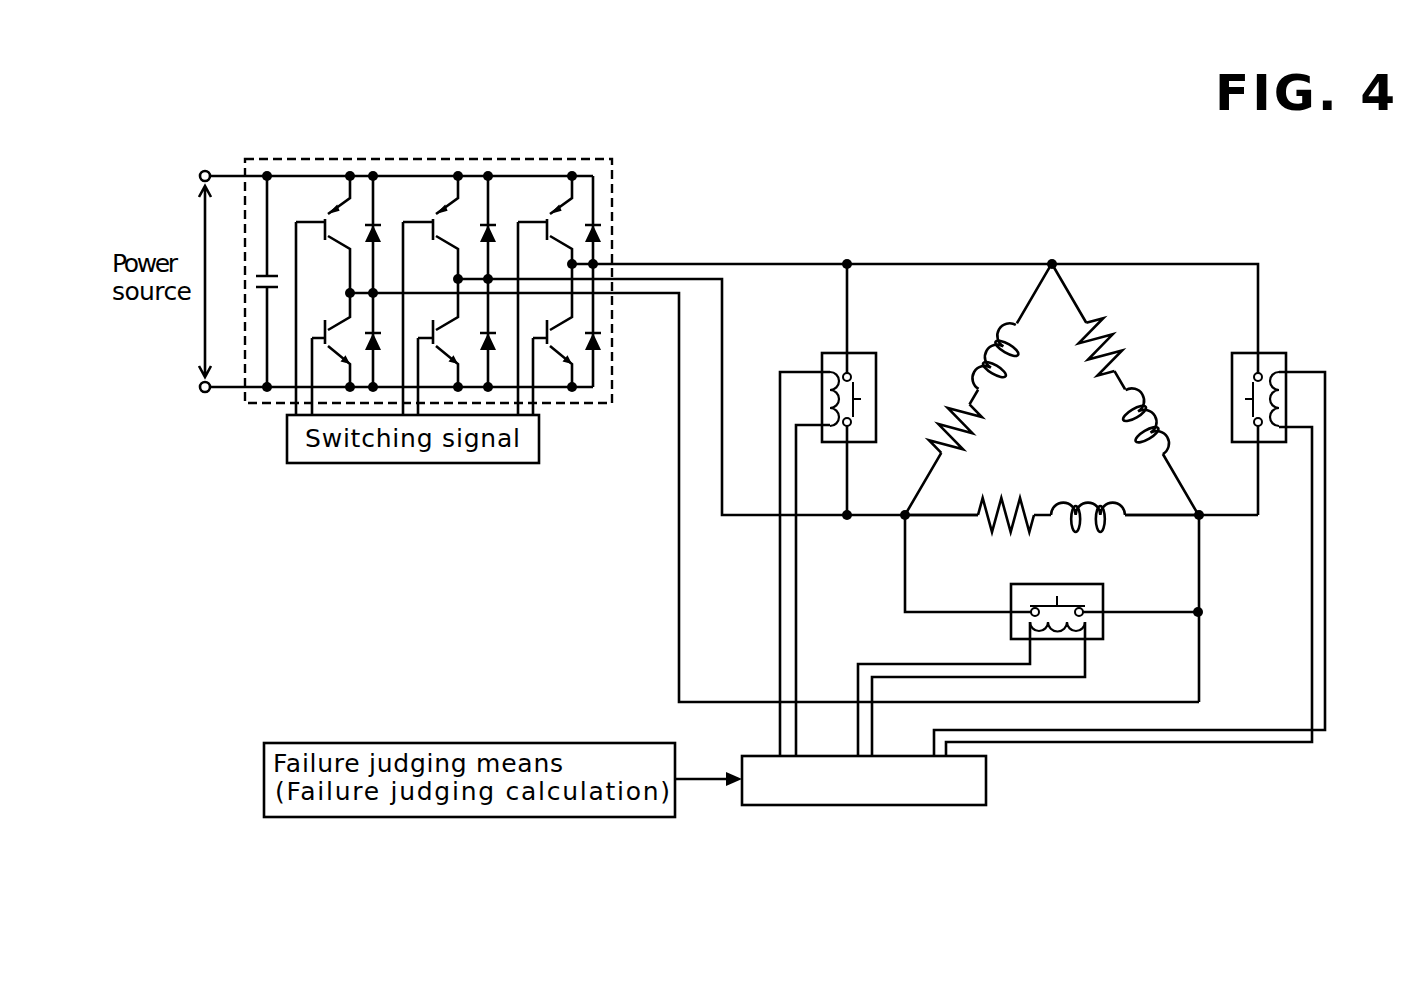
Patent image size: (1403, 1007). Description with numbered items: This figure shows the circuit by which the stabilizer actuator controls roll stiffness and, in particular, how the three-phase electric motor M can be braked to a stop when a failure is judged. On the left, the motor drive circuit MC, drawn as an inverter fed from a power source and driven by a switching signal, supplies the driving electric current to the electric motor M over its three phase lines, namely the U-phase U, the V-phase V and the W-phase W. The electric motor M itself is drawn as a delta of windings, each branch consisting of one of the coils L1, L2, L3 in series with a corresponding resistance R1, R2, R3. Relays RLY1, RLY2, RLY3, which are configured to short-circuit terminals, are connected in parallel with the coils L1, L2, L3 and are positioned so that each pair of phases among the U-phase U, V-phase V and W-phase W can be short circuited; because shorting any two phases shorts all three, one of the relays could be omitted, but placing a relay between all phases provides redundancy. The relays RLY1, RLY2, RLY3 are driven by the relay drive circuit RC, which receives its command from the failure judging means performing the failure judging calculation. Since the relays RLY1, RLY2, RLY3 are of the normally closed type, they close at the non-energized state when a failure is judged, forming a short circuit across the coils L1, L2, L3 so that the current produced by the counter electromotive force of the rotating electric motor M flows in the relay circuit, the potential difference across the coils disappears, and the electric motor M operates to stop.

The motor drive circuit MC is at (600, 156).
The U-phase U is at (915, 299).
The V-phase V is at (858, 397).
The W-phase W is at (774, 497).
The relay RLY1 is at (837, 353).
The relay RLY2 is at (1273, 353).
The relay RLY3 is at (1020, 584).
The electric motor M is at (1052, 393).
The winding resistance 1 R1 is at (956, 429).
The winding resistance 2 R2 is at (1101, 347).
The winding resistance 3 R3 is at (1006, 515).
The coil L1 is at (999, 358).
The coil L2 is at (1142, 423).
The coil L3 is at (1088, 517).
The relay drive circuit RC is at (986, 778).